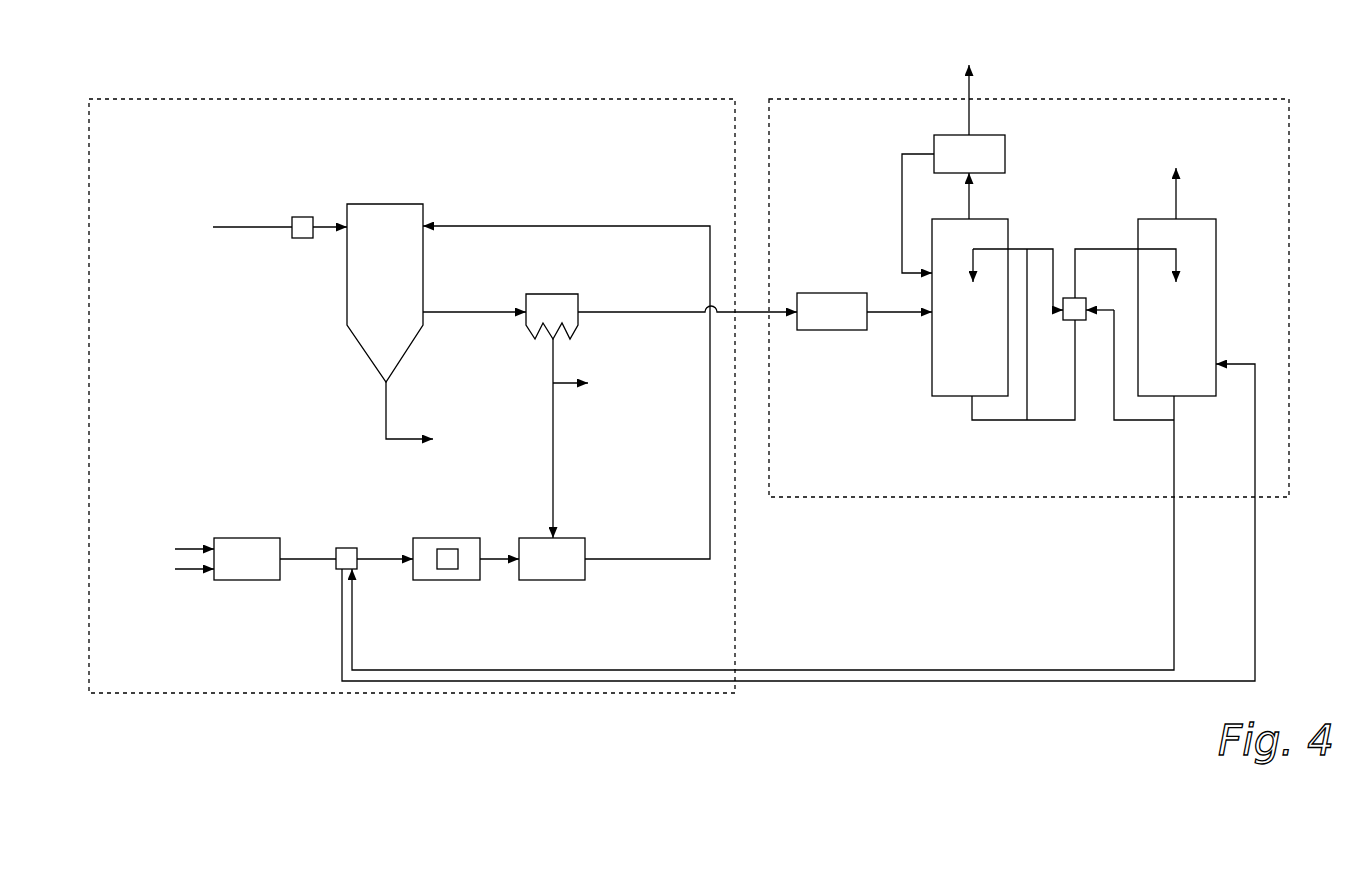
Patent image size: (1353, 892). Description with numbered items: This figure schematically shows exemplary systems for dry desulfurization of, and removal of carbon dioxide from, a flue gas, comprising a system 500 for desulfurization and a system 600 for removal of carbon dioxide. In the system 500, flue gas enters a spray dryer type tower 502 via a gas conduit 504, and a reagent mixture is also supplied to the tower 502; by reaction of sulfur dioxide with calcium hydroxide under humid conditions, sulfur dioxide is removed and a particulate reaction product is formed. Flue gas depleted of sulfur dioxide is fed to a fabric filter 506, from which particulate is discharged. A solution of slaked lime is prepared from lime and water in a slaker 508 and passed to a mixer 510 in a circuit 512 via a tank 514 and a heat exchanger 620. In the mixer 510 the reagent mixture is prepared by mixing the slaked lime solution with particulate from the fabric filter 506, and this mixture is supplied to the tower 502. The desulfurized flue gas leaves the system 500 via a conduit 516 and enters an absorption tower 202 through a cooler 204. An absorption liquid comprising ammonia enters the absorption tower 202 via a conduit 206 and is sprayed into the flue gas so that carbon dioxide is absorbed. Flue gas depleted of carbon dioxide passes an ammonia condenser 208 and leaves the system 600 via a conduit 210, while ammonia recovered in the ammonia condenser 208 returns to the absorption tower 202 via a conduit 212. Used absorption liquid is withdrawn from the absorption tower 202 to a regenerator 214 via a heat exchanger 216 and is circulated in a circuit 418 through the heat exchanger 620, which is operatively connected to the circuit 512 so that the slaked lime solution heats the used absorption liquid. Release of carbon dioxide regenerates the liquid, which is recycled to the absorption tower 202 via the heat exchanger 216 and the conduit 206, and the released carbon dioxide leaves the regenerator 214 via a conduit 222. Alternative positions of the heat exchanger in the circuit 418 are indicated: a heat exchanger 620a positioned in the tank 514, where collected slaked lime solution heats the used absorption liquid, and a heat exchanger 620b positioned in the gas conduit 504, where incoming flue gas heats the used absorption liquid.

The system for desulfurization 500 is at (458, 98).
The system for removal of carbon dioxide 600 is at (846, 97).
The spray dryer type tower 502 is at (395, 203).
The gas conduit 504 is at (270, 226).
The heat exchanger 620b is at (302, 238).
The fabric filter 506 is at (526, 323).
The conduit 516 is at (643, 311).
The slaker 508 is at (248, 583).
The circuit 512 is at (313, 559).
The heat exchanger 620a is at (437, 555).
The heat exchanger 620 is at (338, 573).
The tank 514 is at (455, 583).
The mixer 510 is at (573, 583).
The circuit 418 is at (1174, 552).
The cooler 204 is at (832, 293).
The absorption tower 202 is at (932, 362).
The conduit 212 is at (902, 190).
The ammonia condenser 208 is at (1005, 152).
The conduit 210 is at (972, 107).
The conduit 206 is at (1025, 248).
The heat exchanger 216 is at (1078, 321).
The regenerator 214 is at (1205, 219).
The conduit 222 is at (1176, 197).